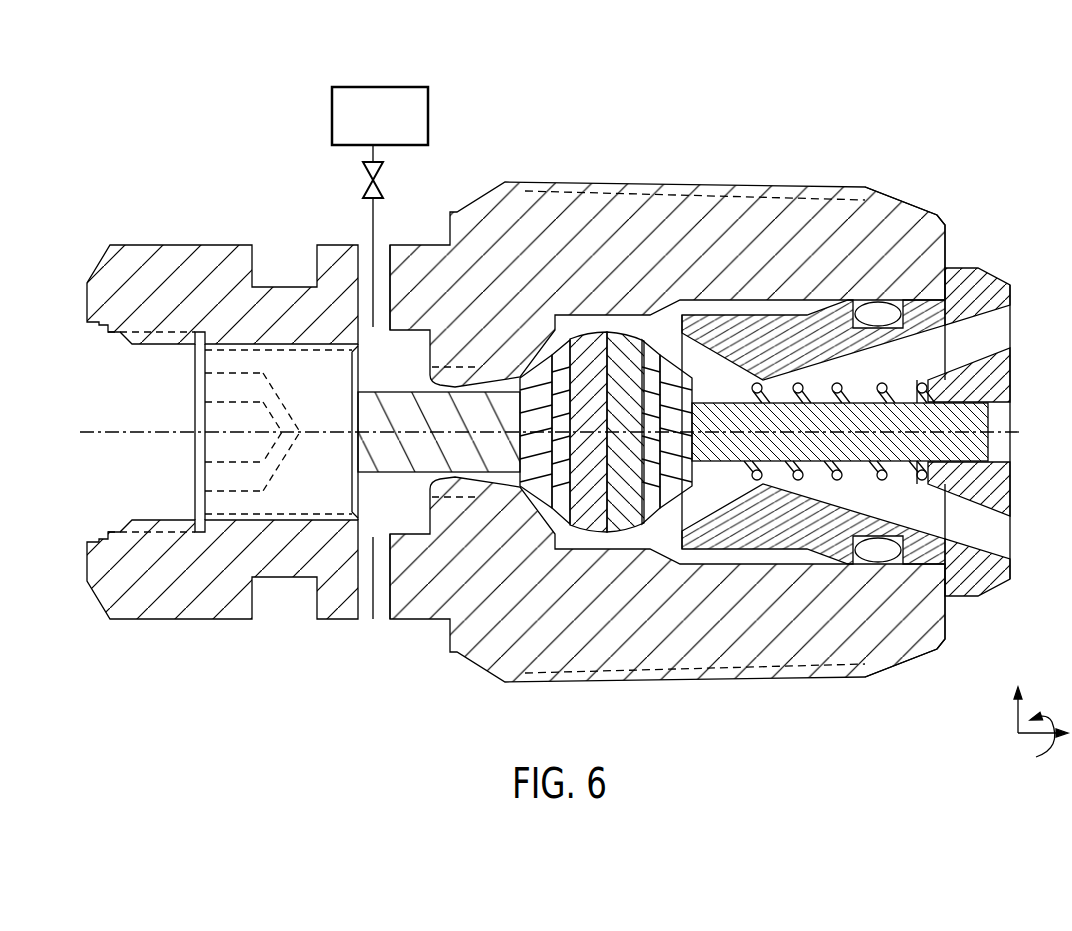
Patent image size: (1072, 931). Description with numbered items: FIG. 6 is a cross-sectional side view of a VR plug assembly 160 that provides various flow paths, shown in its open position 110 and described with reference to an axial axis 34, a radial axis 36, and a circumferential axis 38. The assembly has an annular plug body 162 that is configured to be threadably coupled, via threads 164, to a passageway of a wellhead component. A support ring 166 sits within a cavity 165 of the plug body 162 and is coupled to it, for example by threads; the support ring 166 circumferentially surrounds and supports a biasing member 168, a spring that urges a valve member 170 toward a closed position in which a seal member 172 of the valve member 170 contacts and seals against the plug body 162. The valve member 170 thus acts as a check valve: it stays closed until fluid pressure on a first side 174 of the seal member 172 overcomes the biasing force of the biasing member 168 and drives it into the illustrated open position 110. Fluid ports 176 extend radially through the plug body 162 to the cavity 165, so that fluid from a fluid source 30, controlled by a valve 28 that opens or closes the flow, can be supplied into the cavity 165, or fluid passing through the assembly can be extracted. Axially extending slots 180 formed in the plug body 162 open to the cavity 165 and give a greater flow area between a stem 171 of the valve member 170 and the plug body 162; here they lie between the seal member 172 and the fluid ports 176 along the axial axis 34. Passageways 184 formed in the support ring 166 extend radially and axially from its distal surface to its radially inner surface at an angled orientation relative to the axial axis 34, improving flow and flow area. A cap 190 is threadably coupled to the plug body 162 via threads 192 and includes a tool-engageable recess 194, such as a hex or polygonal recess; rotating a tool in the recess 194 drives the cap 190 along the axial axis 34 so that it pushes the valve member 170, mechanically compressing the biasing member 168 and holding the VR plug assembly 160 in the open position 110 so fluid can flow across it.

The valve 28 is at (372, 182).
The fluid source 30 is at (428, 110).
The axial axis 34 is at (1030, 736).
The radial axis 36 is at (1018, 717).
The circumferential axis 38 is at (1047, 716).
The open position 110 is at (713, 160).
The VR plug assembly 160 is at (877, 404).
The plug body 162 is at (900, 222).
The threads 164 is at (780, 198).
The cavity 165 is at (715, 307).
The support ring 166 is at (808, 322).
The biasing member 168 is at (795, 475).
The valve member 170 is at (527, 538).
The stem 171 is at (390, 463).
The seal member 172 is at (582, 508).
The first side 174 is at (517, 373).
The fluid ports 176 is at (383, 275).
The slots 180 is at (463, 498).
The passageways 184 is at (993, 330).
The cap 190 is at (303, 367).
The threads 192 is at (237, 348).
The recess 194 is at (232, 490).